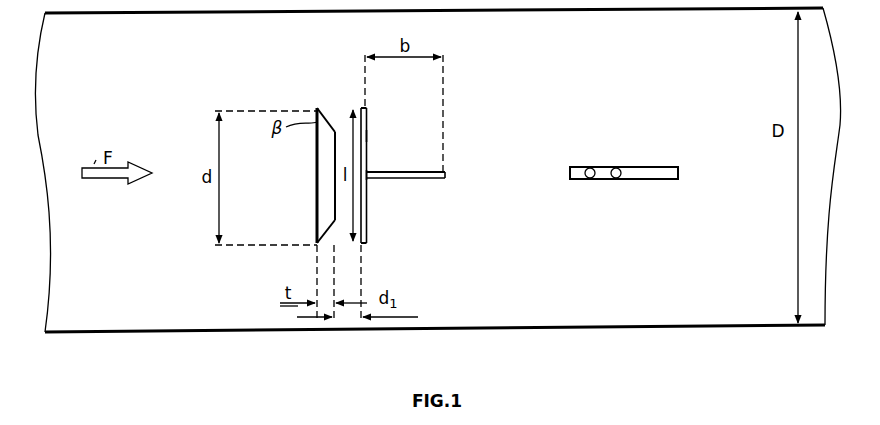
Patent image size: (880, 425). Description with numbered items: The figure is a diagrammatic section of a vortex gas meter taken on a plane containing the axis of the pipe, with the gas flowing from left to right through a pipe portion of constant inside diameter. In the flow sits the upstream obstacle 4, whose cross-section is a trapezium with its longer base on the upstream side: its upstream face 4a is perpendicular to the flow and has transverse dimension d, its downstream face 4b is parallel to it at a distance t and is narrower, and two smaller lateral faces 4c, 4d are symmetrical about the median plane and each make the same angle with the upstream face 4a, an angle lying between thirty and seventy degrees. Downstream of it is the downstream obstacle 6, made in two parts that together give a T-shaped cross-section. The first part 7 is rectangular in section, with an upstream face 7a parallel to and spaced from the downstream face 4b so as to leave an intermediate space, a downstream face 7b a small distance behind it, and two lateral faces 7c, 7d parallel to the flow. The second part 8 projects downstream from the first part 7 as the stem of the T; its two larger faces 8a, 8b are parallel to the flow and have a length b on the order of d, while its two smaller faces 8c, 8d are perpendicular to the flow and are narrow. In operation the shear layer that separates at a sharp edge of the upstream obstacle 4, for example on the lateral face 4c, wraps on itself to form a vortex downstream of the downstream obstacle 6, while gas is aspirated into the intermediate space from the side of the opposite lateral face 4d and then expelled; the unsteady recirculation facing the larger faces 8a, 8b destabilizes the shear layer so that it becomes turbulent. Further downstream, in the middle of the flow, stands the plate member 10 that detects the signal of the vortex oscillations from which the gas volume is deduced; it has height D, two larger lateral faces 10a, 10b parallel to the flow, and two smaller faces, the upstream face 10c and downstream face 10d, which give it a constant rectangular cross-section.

The upstream obstacle 4 is at (300, 164).
The upstream face 4a is at (317, 212).
The downstream face 4b is at (336, 131).
The lateral face 4c is at (326, 120).
The lateral face 4d is at (317, 243).
The downstream obstacle 6 is at (371, 136).
The first part 7 is at (383, 179).
The upstream face 7a is at (360, 208).
The downstream face 7b is at (367, 232).
The lateral face 7c is at (364, 108).
The lateral face 7d is at (364, 243).
The second part 8 is at (434, 179).
The larger face 8a is at (428, 172).
The larger face 8b is at (372, 178).
The smaller face 8c is at (367, 170).
The smaller face 8d is at (446, 175).
The plate member 10 is at (644, 172).
The lateral face 10a is at (577, 166).
The lateral face 10b is at (603, 180).
The upstream face 10c is at (570, 173).
The downstream face 10d is at (678, 170).